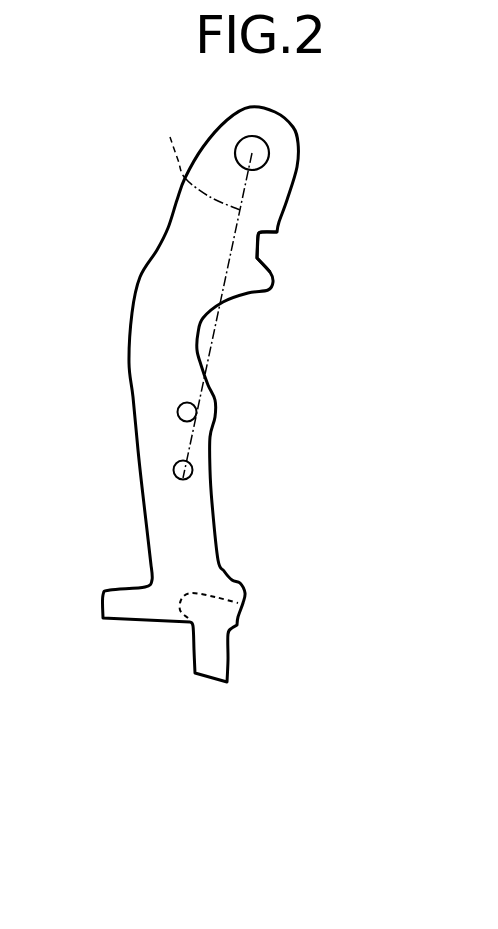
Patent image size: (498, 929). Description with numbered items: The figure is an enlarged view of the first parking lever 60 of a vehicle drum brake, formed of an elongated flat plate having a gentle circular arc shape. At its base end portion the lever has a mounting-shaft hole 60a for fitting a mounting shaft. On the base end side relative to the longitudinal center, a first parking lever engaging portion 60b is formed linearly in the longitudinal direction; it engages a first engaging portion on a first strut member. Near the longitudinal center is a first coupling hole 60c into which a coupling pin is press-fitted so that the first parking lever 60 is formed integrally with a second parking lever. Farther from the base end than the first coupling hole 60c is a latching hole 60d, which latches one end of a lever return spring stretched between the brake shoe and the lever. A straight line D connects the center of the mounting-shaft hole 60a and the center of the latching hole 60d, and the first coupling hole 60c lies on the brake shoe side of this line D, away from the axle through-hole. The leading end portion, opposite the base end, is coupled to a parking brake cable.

The first parking lever 60 is at (150, 268).
The mounting-shaft hole 60a is at (262, 147).
The first parking lever engaging portion 60b is at (259, 243).
The first coupling hole 60c is at (193, 407).
The latching hole 60d is at (190, 463).
The straight line D is at (199, 172).